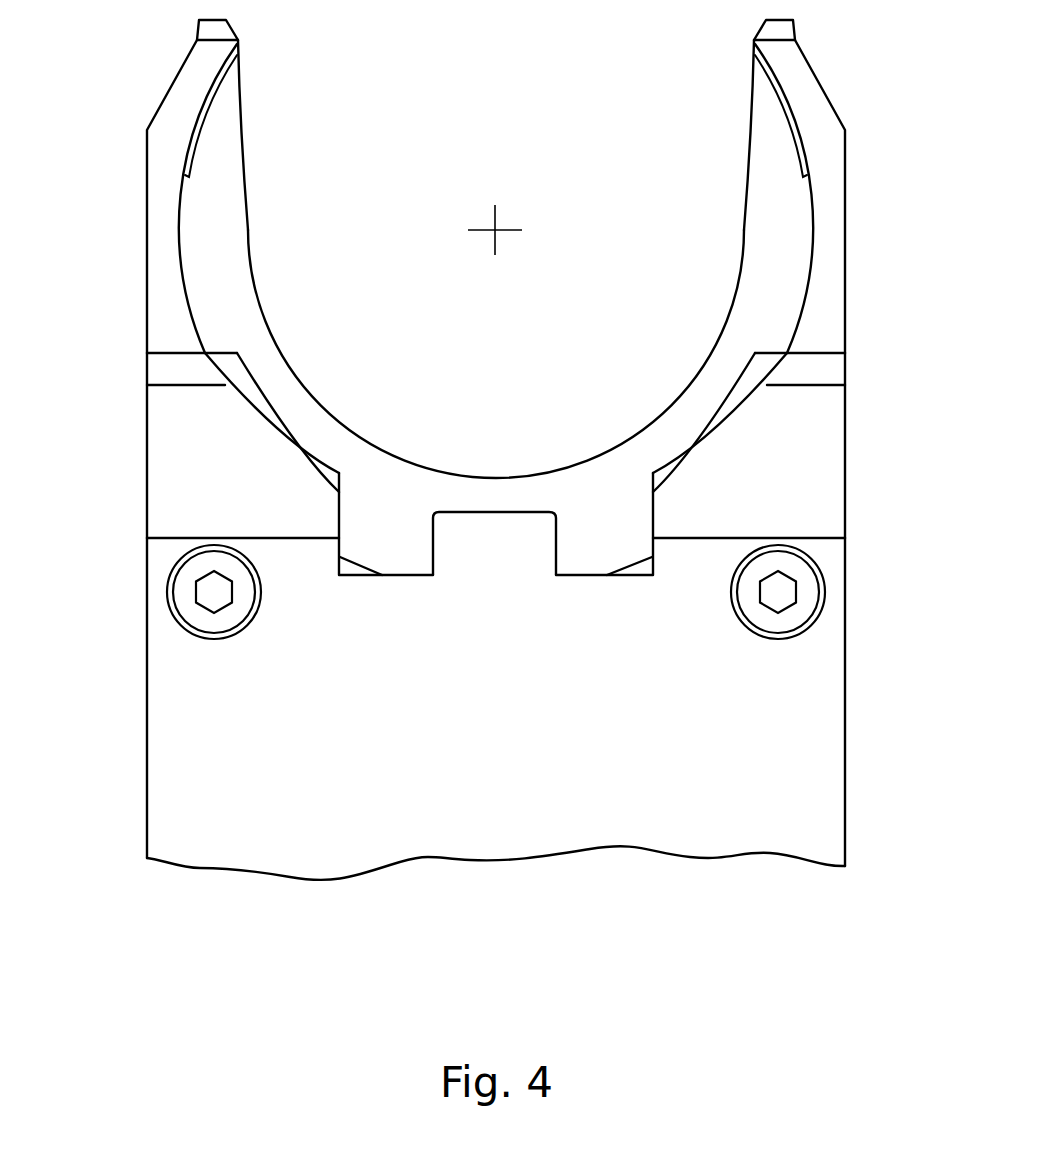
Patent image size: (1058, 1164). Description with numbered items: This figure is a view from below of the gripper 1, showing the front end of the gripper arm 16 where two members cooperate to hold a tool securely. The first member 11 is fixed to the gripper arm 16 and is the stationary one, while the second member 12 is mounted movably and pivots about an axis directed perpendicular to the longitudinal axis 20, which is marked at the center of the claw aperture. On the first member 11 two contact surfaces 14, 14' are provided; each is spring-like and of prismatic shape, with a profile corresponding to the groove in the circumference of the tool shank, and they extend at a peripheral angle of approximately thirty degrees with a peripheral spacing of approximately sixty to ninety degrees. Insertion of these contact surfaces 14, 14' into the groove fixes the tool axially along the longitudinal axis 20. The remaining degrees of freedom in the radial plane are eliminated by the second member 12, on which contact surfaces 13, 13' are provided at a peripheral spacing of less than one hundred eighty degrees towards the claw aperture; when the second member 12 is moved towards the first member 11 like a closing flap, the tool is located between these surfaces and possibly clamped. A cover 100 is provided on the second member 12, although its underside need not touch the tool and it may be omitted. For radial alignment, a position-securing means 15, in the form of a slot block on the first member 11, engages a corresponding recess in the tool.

The gripper 1 is at (610, 797).
The first member 11 is at (183, 468).
The second member 12 is at (162, 110).
The contact surface 13 is at (269, 97).
The contact surface 13' is at (729, 97).
The contact surface 14 is at (294, 415).
The contact surface 14' is at (706, 415).
The position-securing means 15 is at (500, 537).
The gripper arm 16 is at (203, 266).
The longitudinal axis 20 is at (497, 228).
The cover 100 is at (826, 258).